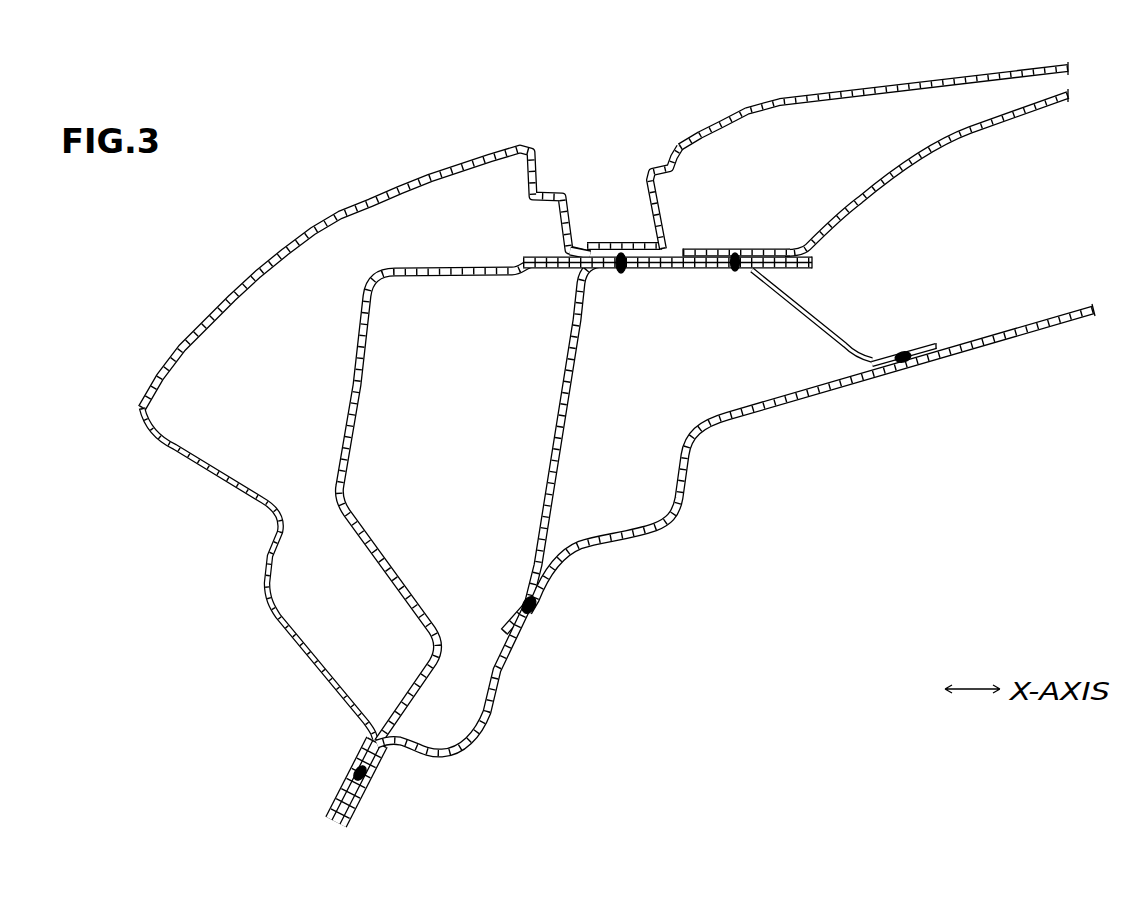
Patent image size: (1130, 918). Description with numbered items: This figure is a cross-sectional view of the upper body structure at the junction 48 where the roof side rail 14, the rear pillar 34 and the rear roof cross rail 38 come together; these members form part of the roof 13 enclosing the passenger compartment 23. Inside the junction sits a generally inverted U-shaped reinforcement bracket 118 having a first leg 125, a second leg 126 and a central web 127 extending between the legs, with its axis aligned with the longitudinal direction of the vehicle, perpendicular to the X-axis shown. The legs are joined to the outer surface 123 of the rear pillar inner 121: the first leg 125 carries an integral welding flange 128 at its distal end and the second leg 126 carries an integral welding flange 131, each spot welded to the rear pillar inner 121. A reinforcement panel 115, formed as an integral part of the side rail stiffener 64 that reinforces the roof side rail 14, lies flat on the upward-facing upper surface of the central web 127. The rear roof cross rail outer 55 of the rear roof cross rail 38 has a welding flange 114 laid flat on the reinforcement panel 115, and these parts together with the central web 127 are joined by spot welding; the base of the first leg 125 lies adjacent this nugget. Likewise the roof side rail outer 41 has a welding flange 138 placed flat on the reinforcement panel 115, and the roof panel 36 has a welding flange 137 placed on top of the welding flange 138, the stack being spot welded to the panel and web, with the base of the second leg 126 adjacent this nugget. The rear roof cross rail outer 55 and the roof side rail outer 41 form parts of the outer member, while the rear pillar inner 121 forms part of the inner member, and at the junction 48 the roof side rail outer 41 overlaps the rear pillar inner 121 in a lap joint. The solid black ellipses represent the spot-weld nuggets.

The roof 13 is at (811, 138).
The roof side rail 14 is at (277, 238).
The passenger compartment 23 is at (797, 705).
The rear pillar 34 is at (515, 672).
The roof panel 36 is at (913, 92).
The rear roof cross rail 38 is at (975, 140).
The roof side rail outer 41 is at (349, 429).
The junction 48 is at (617, 146).
The rear roof cross rail outer 55 is at (892, 173).
The side rail stiffener 64 is at (372, 283).
The welding flange 114 is at (732, 218).
The reinforcement panel 115 is at (675, 250).
The inverted U-shaped reinforcement bracket 118 is at (606, 350).
The rear pillar inner 121 is at (736, 510).
The outer surface 123 is at (725, 414).
The first leg 125 is at (825, 320).
The second leg 126 is at (558, 408).
The central web 127 is at (538, 353).
The welding flange 128 is at (903, 345).
The welding flange 131 is at (505, 612).
The welding flange 137 is at (605, 240).
The welding flange 138 is at (577, 243).